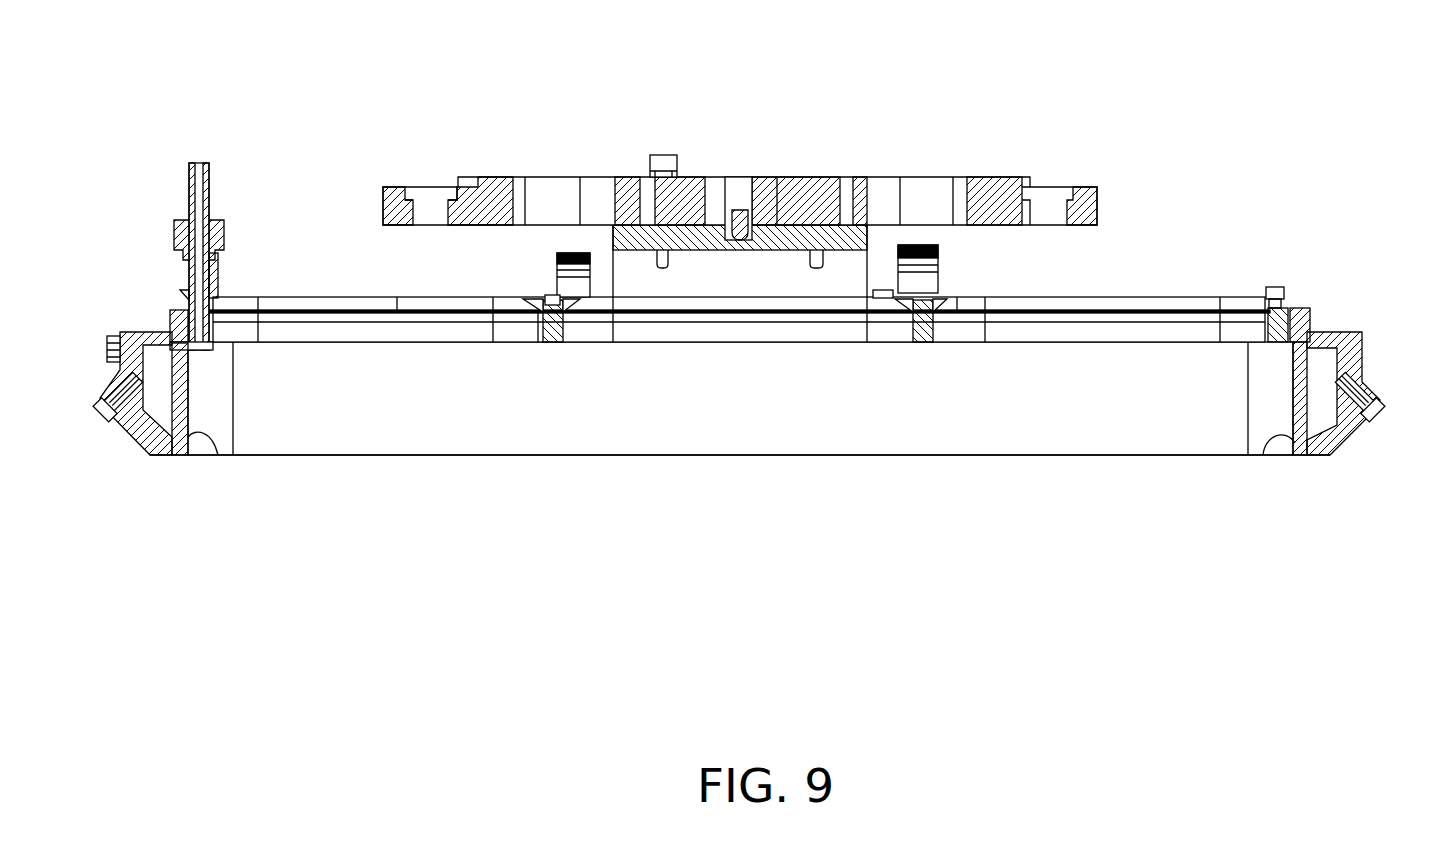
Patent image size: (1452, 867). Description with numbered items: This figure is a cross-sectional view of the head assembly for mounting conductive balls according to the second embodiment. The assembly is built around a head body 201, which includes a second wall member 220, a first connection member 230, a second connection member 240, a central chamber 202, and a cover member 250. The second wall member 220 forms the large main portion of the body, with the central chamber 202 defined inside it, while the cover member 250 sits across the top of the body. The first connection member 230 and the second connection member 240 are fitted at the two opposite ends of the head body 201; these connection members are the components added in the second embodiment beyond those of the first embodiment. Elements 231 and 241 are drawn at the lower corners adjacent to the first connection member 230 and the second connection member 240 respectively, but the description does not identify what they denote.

The head body 201 is at (776, 124).
The central chamber 202 is at (547, 428).
The second wall member 220 is at (1108, 388).
The first connection member 230 is at (1382, 356).
The right seal 231 is at (1263, 455).
The second connection member 240 is at (125, 484).
The left seal 241 is at (218, 455).
The cover member 250 is at (318, 297).